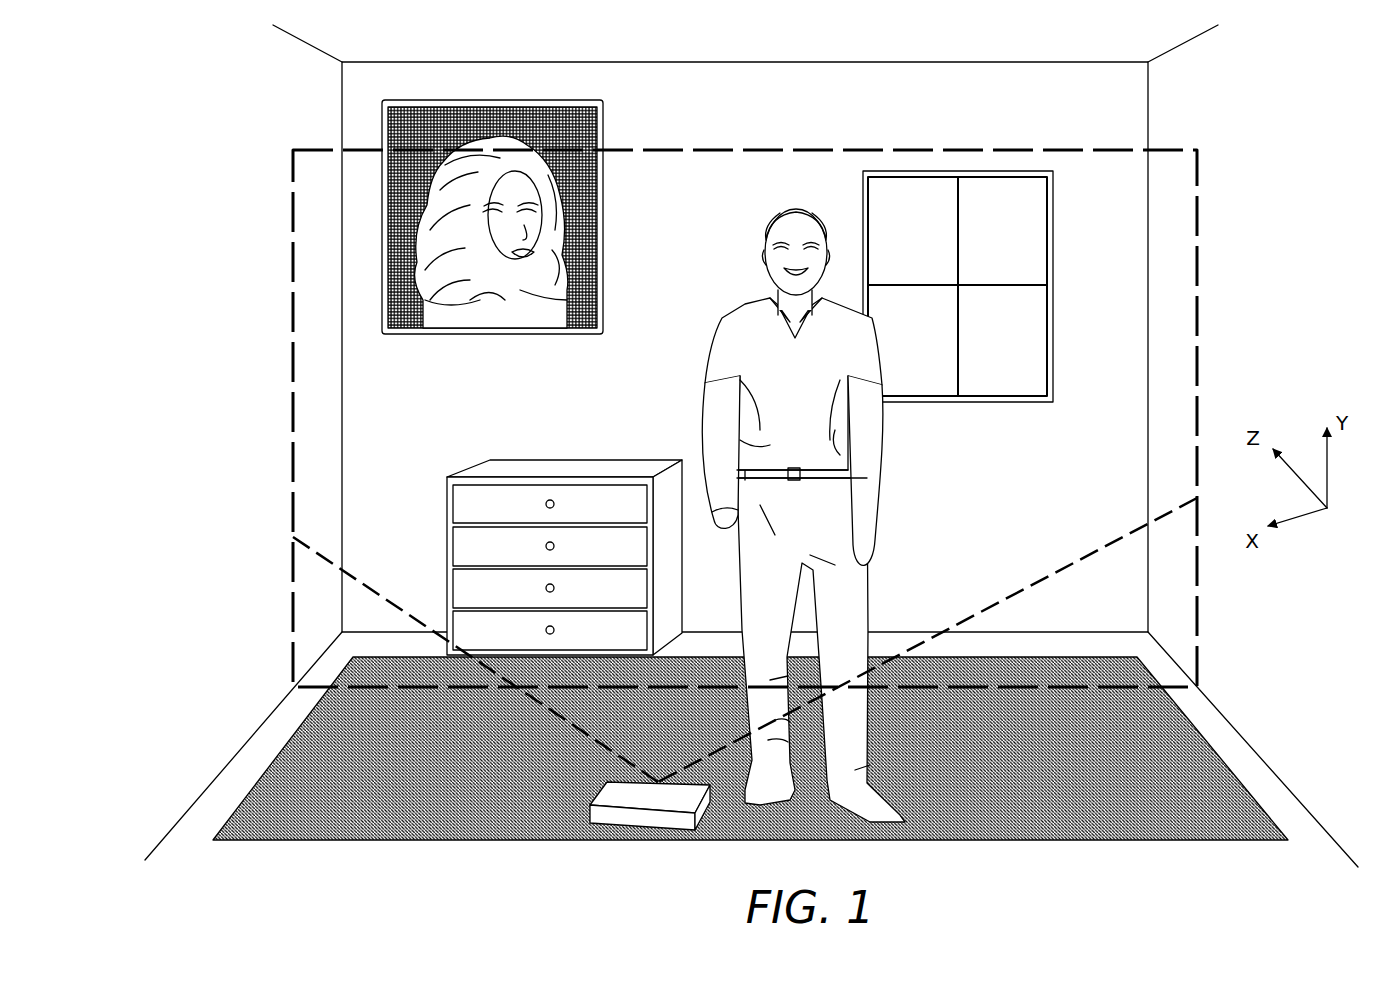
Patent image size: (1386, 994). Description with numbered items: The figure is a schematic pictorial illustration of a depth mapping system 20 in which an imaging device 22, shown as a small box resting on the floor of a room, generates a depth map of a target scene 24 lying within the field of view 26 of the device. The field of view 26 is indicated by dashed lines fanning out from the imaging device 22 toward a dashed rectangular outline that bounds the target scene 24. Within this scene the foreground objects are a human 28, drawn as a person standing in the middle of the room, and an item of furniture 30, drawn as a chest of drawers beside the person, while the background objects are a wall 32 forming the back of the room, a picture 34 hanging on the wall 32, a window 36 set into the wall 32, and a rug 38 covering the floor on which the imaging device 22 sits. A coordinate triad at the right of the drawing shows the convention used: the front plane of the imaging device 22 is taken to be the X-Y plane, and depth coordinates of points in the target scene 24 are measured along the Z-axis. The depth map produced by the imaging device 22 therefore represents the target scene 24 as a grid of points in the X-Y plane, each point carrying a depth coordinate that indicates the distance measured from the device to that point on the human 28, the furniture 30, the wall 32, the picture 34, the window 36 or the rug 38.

The depth mapping system 20 is at (228, 224).
The imaging device 22 is at (628, 822).
The target scene 24 is at (1199, 226).
The field of view 26 is at (385, 597).
The human figure 28 is at (730, 317).
The furniture 30 is at (645, 460).
The wall 32 is at (648, 198).
The picture 34 is at (597, 125).
The window 36 is at (1055, 200).
The rug 38 is at (283, 748).